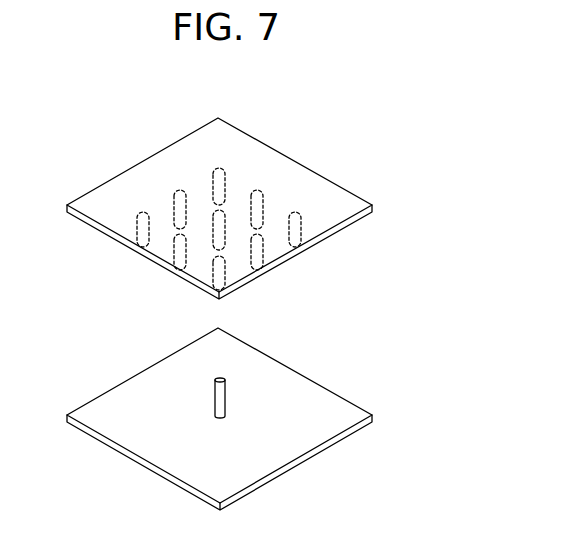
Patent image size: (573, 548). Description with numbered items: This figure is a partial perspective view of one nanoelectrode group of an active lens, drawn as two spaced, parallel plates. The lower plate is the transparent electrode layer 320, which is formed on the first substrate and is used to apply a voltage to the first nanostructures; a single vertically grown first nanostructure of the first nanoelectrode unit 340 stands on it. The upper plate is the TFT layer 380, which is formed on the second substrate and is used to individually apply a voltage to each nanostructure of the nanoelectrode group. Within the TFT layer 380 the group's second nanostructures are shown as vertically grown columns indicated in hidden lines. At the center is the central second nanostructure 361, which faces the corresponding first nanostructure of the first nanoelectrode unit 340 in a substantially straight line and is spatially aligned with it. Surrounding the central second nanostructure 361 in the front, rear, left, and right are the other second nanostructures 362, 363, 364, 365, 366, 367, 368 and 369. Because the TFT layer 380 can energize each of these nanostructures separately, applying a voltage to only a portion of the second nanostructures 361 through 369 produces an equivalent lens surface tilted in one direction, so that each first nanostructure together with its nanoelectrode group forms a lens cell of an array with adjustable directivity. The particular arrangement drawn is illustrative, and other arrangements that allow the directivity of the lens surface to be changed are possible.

The transparent electrode layer 320 is at (335, 410).
The first nanoelectrode unit 340 is at (226, 400).
The central second nanostructure 361 is at (225, 240).
The second nanostructure 362 is at (180, 190).
The second nanostructure 363 is at (143, 212).
The second nanostructure 364 is at (180, 258).
The second nanostructure 365 is at (218, 277).
The second nanostructure 366 is at (262, 247).
The second nanostructure 367 is at (295, 212).
The second nanostructure 368 is at (257, 190).
The second nanostructure 369 is at (218, 168).
The TFT layer 380 is at (347, 223).